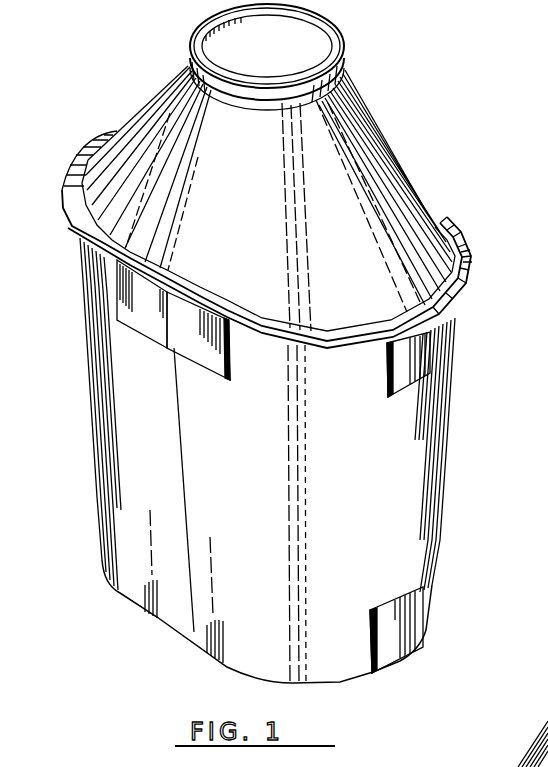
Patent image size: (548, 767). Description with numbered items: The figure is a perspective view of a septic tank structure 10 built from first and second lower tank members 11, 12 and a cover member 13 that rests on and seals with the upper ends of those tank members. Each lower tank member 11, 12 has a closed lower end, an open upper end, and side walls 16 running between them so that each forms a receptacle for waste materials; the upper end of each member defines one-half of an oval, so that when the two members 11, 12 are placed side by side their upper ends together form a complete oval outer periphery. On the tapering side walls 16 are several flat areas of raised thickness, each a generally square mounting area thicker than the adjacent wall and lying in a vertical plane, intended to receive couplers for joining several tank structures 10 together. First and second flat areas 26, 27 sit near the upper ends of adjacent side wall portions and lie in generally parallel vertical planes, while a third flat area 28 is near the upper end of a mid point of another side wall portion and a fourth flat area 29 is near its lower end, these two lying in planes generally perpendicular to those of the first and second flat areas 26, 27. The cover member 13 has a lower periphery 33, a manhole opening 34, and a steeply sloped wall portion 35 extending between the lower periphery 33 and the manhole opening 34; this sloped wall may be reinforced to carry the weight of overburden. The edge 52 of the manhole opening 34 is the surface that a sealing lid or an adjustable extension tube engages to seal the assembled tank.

The septic tank structure 10 is at (390, 92).
The first lower tank member 11 is at (122, 503).
The second lower tank member 12 is at (415, 490).
The cover member 13 is at (345, 160).
The side walls 16 is at (160, 582).
The first flat area 26 is at (152, 313).
The second flat area 27 is at (208, 352).
The third flat area 28 is at (415, 345).
The fourth flat area 29 is at (405, 618).
The lower periphery 33 is at (458, 255).
The manhole opening 34 is at (287, 53).
The sloped wall portion 35 is at (397, 205).
The edge of the manhole opening 52 is at (193, 78).